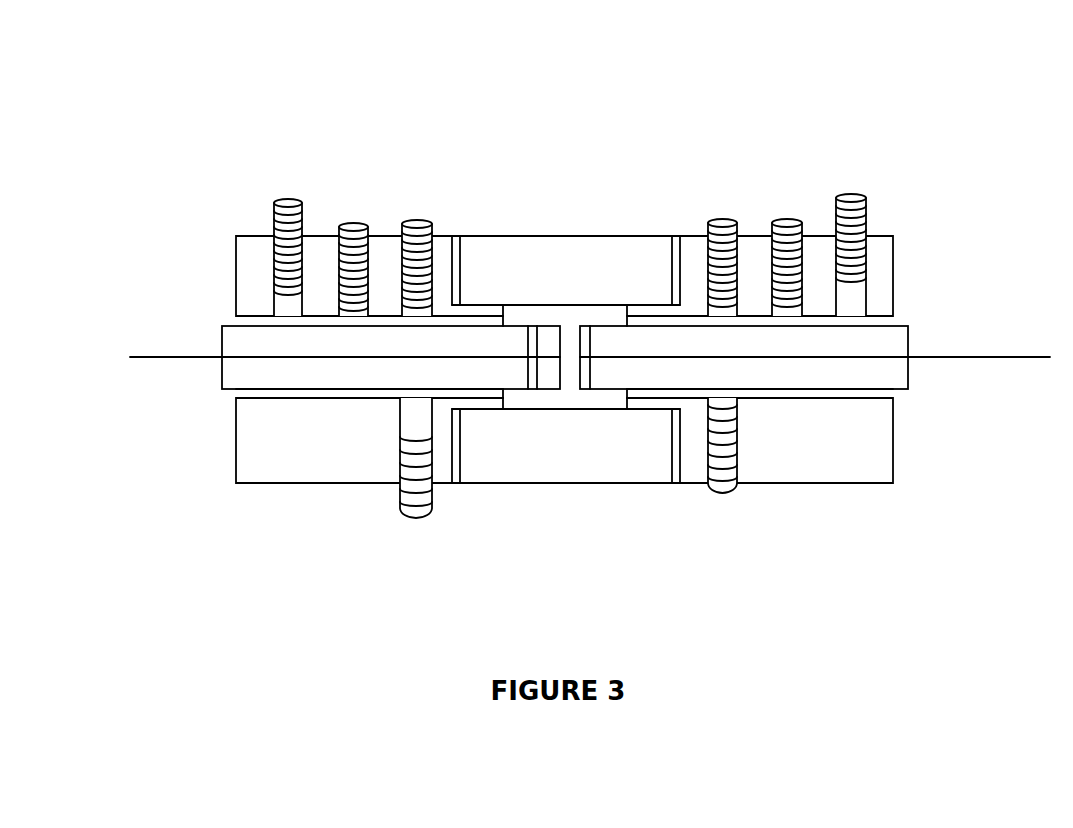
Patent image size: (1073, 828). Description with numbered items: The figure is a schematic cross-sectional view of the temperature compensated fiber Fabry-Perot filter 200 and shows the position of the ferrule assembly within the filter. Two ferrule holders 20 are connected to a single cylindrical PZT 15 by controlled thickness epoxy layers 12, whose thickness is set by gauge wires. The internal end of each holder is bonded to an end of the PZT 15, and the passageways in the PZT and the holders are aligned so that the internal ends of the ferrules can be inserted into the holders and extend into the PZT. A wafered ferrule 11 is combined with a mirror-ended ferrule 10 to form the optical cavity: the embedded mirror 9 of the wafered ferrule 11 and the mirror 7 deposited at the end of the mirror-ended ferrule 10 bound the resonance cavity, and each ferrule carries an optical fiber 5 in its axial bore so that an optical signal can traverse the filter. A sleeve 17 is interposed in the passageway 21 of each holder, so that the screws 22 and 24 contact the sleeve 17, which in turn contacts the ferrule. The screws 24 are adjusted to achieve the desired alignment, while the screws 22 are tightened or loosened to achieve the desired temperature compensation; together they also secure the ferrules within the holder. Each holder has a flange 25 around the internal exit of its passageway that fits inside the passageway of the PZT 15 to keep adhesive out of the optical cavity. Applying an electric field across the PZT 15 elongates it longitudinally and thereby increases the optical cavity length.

The temperature compensated FFP 200 is at (847, 67).
The optical fiber 5 is at (975, 357).
The mirror 7 is at (588, 326).
The embedded mirror 9 is at (532, 326).
The mirror-ended ferrule 10 is at (910, 345).
The wafered ferrule 11 is at (220, 343).
The epoxy layer 12 is at (455, 236).
The PZT 15 is at (607, 485).
The sleeve 17 is at (237, 395).
The ferrule holder 20 is at (297, 488).
The passageway 21 is at (235, 316).
The alignment screw 22 is at (415, 223).
The temperature compensation screw 24 is at (354, 226).
The flange 25 is at (468, 400).